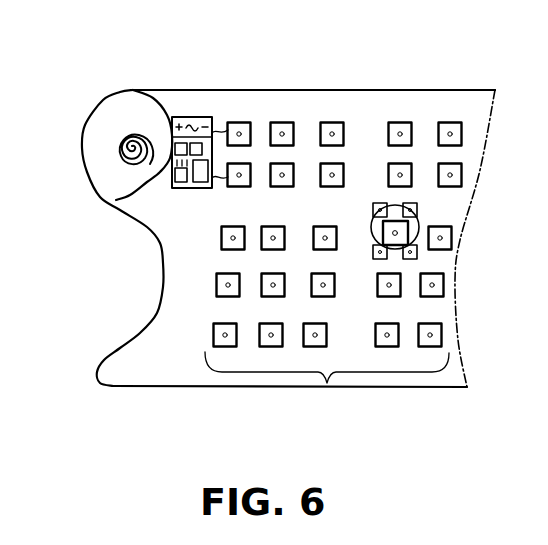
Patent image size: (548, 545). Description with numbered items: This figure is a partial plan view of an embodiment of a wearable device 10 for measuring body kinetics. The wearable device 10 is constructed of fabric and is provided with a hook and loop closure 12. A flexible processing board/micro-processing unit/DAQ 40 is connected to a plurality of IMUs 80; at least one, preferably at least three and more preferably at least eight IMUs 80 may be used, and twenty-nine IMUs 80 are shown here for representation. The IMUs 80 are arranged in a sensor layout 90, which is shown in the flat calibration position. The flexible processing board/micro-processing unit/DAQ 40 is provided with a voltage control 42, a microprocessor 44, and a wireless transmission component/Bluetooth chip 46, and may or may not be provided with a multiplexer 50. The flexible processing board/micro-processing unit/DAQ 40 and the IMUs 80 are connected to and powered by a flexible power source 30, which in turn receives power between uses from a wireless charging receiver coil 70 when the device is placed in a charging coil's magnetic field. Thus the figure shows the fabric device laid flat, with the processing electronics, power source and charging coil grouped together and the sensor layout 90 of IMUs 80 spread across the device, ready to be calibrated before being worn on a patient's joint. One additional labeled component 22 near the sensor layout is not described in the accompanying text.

The wearable device 10 is at (335, 70).
The sensor layout 90 is at (360, 210).
The hook and loop closure 12 is at (83, 153).
The wireless charging receiver coil 70 is at (110, 142).
The flexible processing board/micro-processing unit/DAQ 40 is at (116, 200).
The voltage control 42 is at (173, 143).
The flexible power source 30 is at (190, 117).
The microprocessor 44 is at (198, 143).
The wireless transmission component/Bluetooth chip 46 is at (173, 177).
The multiplexer 50 is at (193, 182).
The IMU 80 is at (327, 383).
The sensor component 22 is at (418, 240).